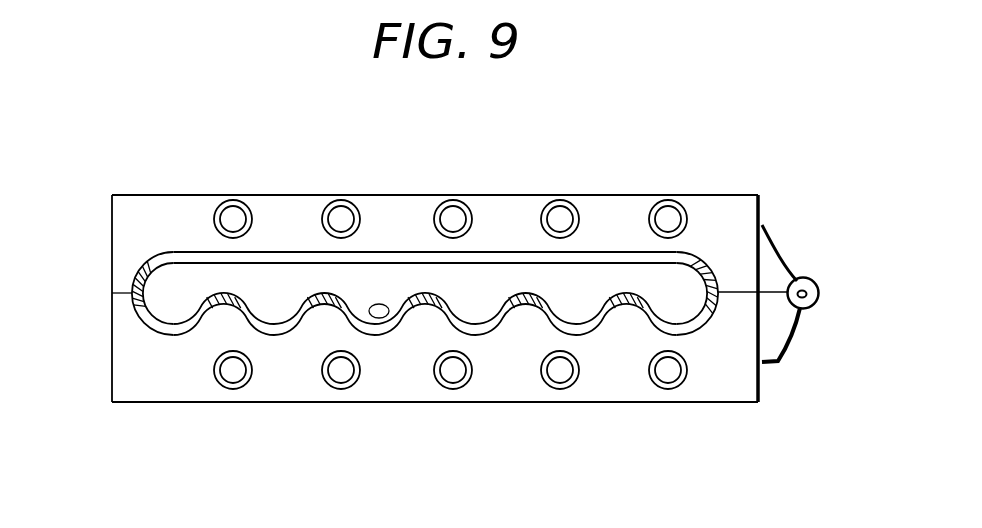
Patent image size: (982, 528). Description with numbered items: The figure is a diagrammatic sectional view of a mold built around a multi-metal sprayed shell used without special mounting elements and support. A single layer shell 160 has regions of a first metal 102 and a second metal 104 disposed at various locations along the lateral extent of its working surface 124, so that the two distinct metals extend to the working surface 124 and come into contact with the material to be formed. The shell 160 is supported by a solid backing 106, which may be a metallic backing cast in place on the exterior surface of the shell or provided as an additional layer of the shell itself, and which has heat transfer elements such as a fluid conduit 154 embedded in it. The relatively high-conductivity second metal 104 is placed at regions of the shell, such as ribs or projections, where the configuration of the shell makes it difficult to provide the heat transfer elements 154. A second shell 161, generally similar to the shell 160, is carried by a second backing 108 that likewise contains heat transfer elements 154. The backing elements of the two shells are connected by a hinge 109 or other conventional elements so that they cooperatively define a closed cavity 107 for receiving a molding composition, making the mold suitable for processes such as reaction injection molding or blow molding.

The first metal 102 is at (189, 337).
The second metal 104 is at (112, 300).
The solid backing 106 is at (112, 372).
The closed cavity 107 is at (682, 277).
The second backing 108 is at (112, 250).
The hinge 109 is at (822, 290).
The working surface 124 is at (367, 316).
The fluid conduit 154 is at (440, 201).
The single layer shell 160 is at (149, 336).
The second shell 161 is at (288, 252).